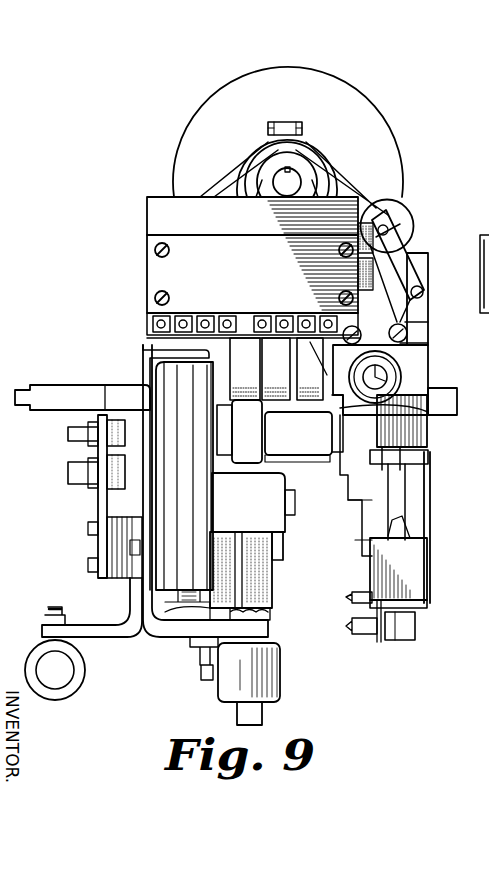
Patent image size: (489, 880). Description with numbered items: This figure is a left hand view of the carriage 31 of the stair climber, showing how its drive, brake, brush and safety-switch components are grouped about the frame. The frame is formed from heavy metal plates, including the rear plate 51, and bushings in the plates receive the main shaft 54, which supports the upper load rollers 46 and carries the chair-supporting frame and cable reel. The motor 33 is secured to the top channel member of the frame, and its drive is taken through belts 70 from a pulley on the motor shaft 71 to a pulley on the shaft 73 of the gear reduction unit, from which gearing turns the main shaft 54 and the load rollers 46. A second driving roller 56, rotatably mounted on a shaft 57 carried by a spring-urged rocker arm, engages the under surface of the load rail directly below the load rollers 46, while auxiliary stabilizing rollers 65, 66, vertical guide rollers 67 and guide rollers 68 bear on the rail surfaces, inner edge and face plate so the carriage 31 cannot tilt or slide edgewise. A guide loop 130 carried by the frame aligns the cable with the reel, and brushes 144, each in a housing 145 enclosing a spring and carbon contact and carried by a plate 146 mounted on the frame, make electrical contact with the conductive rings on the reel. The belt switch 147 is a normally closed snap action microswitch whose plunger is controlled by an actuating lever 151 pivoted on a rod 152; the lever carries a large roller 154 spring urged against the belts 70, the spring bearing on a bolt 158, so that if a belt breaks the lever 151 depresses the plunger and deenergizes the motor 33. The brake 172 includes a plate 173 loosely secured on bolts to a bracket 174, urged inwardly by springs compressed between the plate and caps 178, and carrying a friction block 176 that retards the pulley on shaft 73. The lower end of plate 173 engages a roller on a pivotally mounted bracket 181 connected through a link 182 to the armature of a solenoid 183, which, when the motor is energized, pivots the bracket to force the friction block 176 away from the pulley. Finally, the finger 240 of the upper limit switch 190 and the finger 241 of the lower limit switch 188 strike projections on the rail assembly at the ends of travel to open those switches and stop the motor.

The motor 33 is at (345, 108).
The belts 70 is at (335, 166).
The motor shaft 71 is at (298, 172).
The roller 154 is at (399, 203).
The actuating lever 151 is at (390, 247).
The belt switch 147 is at (402, 243).
The bolt 158 is at (428, 266).
The rod 152 is at (420, 298).
The bracket 174 is at (430, 330).
The caps 178 is at (428, 345).
The shaft 73 is at (376, 362).
The plate 173 is at (402, 370).
The main shaft 54 is at (444, 402).
The friction block 176 is at (428, 412).
The brake 172 is at (428, 440).
The bracket 181 is at (428, 460).
The link 182 is at (430, 498).
The solenoid 183 is at (410, 580).
The switch 188 is at (428, 604).
The limit switch 190 is at (416, 633).
The finger 240 is at (350, 602).
The finger 241 is at (352, 632).
The load rollers 46 is at (272, 385).
The stabilizing roller 65 is at (312, 442).
The stabilizing roller 66 is at (270, 520).
The shaft 57 is at (285, 548).
The guide rollers 68 is at (347, 488).
The second driving roller 56 is at (266, 584).
The rear plate 51 is at (150, 344).
The vertical guide rollers 67 is at (178, 378).
The plate 146 is at (100, 503).
The brushes 144 is at (74, 430).
The housing 145 is at (114, 486).
The carriage 31 is at (172, 649).
The guide loop 130 is at (84, 686).